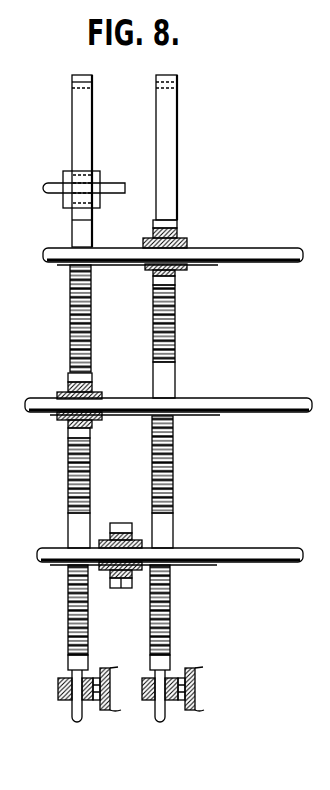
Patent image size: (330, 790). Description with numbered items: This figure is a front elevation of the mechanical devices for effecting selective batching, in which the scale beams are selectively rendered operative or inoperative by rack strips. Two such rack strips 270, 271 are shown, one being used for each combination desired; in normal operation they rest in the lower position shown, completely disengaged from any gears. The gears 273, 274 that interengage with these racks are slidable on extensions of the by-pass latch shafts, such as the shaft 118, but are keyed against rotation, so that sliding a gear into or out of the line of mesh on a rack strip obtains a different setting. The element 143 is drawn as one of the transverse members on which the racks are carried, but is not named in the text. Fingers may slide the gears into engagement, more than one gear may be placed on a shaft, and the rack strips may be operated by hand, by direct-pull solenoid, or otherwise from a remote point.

The rack strip 270 is at (83, 144).
The rack strip 271 is at (166, 191).
The shaft 118 is at (227, 252).
The gear 273 is at (92, 430).
The lower plate 143 is at (237, 552).
The gear 274 is at (121, 588).